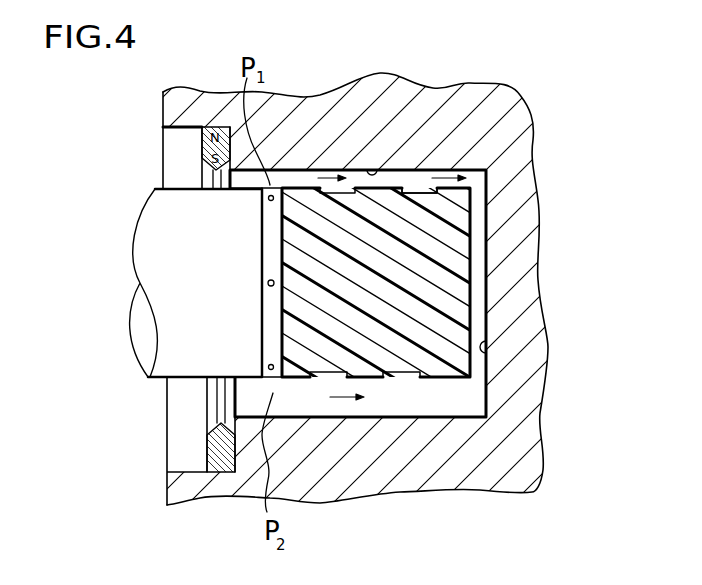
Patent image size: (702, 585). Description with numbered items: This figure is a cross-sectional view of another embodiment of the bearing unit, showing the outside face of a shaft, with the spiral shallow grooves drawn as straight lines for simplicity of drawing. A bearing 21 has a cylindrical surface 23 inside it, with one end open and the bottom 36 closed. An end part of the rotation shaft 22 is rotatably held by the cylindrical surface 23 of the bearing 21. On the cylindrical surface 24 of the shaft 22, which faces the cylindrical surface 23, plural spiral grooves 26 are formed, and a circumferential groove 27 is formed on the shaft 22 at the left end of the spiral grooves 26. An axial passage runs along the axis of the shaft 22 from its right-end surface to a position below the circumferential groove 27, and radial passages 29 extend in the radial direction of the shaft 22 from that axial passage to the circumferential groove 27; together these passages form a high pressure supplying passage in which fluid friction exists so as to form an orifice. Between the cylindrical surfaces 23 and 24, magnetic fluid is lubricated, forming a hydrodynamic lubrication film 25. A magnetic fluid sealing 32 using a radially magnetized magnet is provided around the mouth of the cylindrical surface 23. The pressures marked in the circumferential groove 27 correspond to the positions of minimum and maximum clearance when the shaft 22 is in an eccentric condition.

The bearing 21 is at (190, 117).
The rotation shaft 22 is at (152, 237).
The cylindrical surface 23 is at (368, 170).
The cylindrical surface 24 is at (418, 190).
The hydrodynamic lubrication film 25 is at (455, 190).
The spiral grooves 26 is at (413, 332).
The circumferential groove 27 is at (262, 327).
The radial passages 29 is at (266, 285).
The magnetic fluid sealing 32 is at (207, 440).
The bottom 36 is at (486, 347).